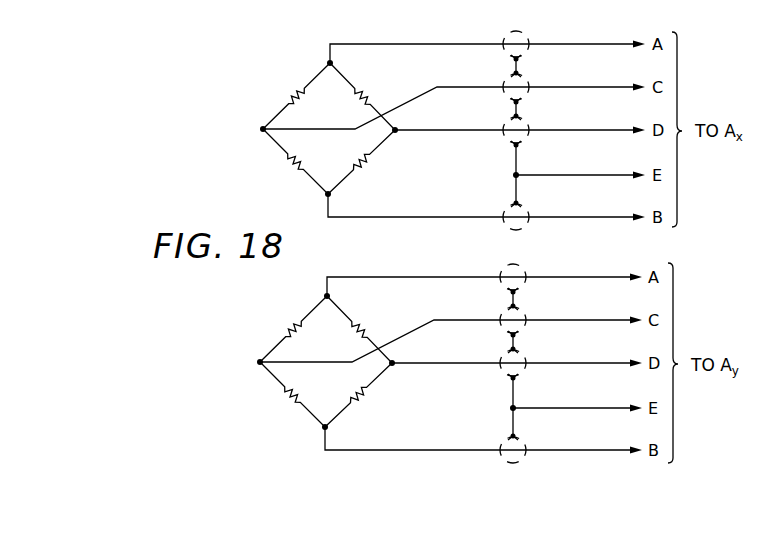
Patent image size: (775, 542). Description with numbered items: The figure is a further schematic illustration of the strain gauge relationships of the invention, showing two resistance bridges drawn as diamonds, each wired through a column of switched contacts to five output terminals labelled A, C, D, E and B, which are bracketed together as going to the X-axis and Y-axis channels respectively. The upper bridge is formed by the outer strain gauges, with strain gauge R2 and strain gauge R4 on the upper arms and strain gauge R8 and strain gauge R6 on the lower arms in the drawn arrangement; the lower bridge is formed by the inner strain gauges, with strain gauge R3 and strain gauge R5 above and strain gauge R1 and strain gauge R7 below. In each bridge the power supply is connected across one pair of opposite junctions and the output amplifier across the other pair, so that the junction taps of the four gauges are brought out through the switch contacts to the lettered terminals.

The strain gauge R1 is at (292, 394).
The strain gauge R2 is at (296, 96).
The strain gauge R3 is at (293, 329).
The strain gauge R4 is at (362, 96).
The strain gauge R5 is at (359, 329).
The strain gauge R6 is at (361, 162).
The strain gauge R7 is at (359, 395).
The strain gauge R8 is at (295, 161).